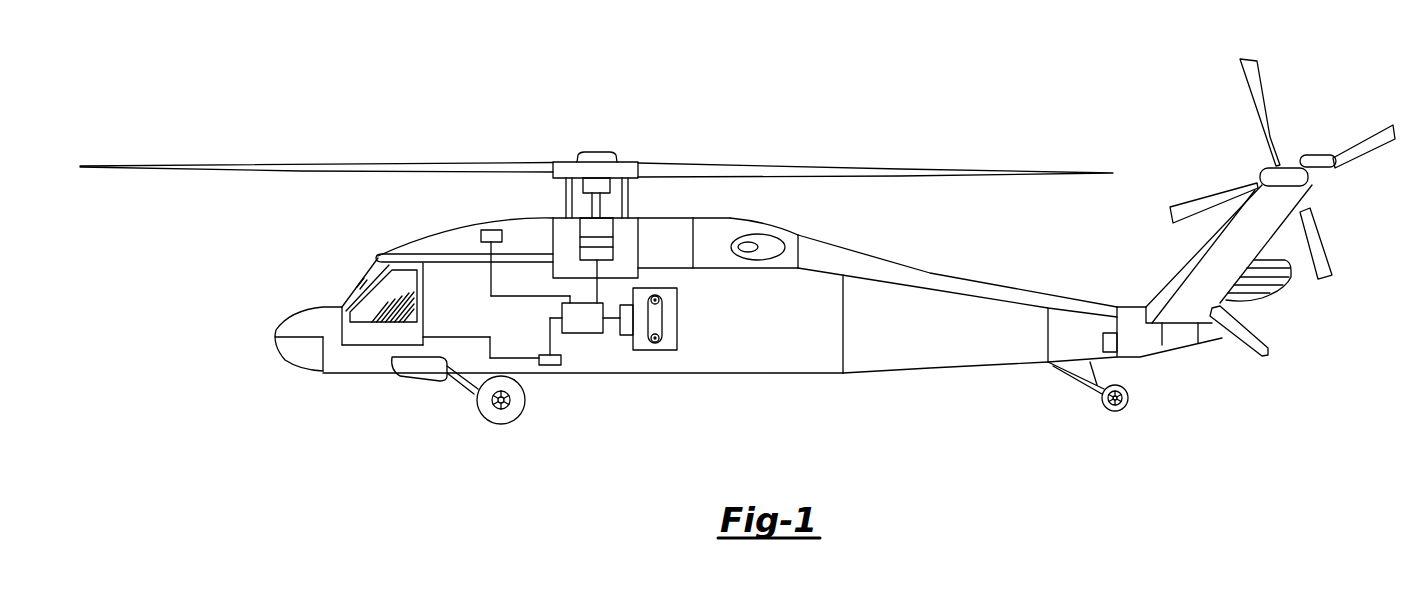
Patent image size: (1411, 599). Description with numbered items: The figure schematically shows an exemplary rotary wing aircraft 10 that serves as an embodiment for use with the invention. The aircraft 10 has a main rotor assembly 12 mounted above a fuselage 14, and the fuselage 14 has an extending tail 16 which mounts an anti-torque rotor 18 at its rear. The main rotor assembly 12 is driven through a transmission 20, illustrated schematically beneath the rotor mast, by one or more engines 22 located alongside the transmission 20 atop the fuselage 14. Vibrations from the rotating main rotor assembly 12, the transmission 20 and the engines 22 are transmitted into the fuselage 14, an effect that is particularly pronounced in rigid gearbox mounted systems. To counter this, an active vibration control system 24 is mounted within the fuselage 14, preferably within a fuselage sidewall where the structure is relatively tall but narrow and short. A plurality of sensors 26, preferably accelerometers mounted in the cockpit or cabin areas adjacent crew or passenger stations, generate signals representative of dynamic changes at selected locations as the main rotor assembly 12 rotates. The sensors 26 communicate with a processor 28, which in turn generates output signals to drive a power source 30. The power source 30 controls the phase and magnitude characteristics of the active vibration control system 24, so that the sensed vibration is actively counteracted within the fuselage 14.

The aircraft 10 is at (790, 72).
The main rotor assembly 12 is at (636, 140).
The fuselage 14 is at (886, 266).
The tail 16 is at (1081, 325).
The anti-torque rotor 18 is at (1372, 146).
The transmission 20 is at (607, 237).
The engine 22 is at (718, 232).
The active vibration control (AVC) system 24 is at (677, 335).
The sensors 26 is at (491, 230).
The processor 28 is at (594, 328).
The power source 30 is at (625, 335).